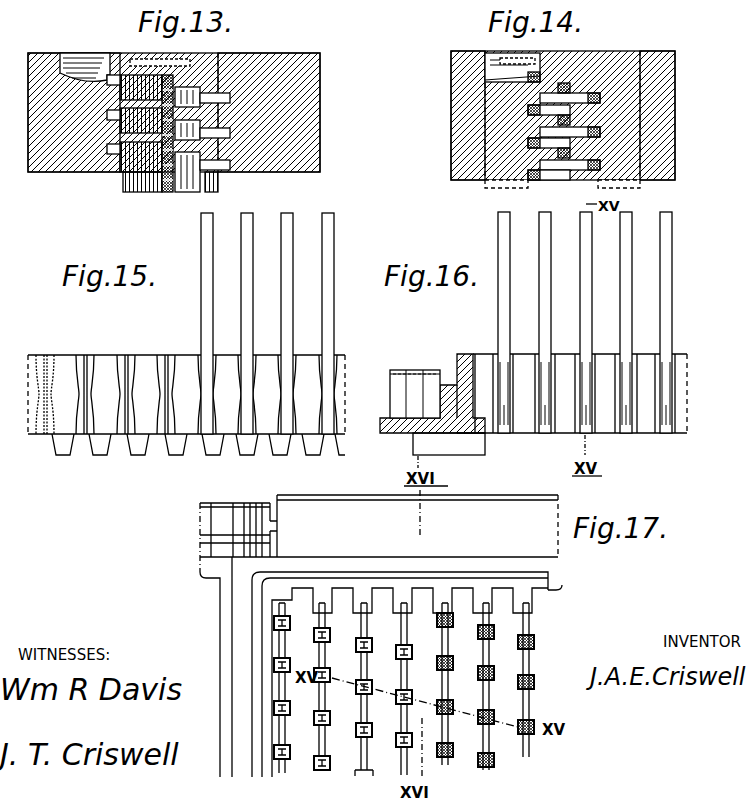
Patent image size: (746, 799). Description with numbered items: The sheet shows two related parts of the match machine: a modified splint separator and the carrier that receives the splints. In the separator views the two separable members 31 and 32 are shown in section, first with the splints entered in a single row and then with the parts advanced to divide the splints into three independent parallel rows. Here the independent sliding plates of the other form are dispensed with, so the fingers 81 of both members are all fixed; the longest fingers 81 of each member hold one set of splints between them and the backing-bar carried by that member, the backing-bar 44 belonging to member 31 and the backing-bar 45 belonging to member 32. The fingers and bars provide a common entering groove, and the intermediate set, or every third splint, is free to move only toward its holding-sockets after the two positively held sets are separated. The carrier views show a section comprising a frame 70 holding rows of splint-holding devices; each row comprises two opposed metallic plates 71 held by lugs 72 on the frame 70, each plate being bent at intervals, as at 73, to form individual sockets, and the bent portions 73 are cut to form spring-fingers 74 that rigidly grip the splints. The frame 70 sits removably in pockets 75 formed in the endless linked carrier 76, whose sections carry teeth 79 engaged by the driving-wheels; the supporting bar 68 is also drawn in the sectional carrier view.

In FIG. 13, the separator member 31 is at (312, 56).
In FIG. 14, the separator member 31 is at (662, 53).
In FIG. 13, the separator member 32 is at (44, 54).
In FIG. 14, the separator member 32 is at (451, 53).
In FIG. 13, the backing-bar 44 is at (165, 182).
In FIG. 14, the backing-bar 44 is at (492, 182).
In FIG. 13, the backing-bar 45 is at (219, 183).
In FIG. 14, the backing-bar 45 is at (640, 187).
In FIG. 13, the fixed fingers 81 is at (133, 165).
In FIG. 14, the fixed fingers 81 is at (565, 170).
In FIG. 15, the holder bar 68 is at (186, 375).
In FIG. 16, the frame 70 is at (466, 355).
In FIG. 17, the frame 70 is at (417, 669).
In FIG. 15, the metallic plates 71 is at (86, 358).
In FIG. 17, the metallic plates 71 is at (447, 653).
In FIG. 17, the lugs 72 is at (490, 592).
In FIG. 16, the bent portions 73 is at (661, 430).
In FIG. 17, the bent portions 73 is at (333, 668).
In FIG. 15, the spring-fingers 74 is at (82, 396).
In FIG. 16, the spring-fingers 74 is at (545, 412).
In FIG. 17, the spring-fingers 74 is at (290, 672).
In FIG. 16, the pockets 75 is at (464, 430).
In FIG. 17, the pockets 75 is at (220, 633).
In FIG. 17, the endless linked carrier 76 is at (379, 522).
In FIG. 15, the teeth 79 is at (134, 438).